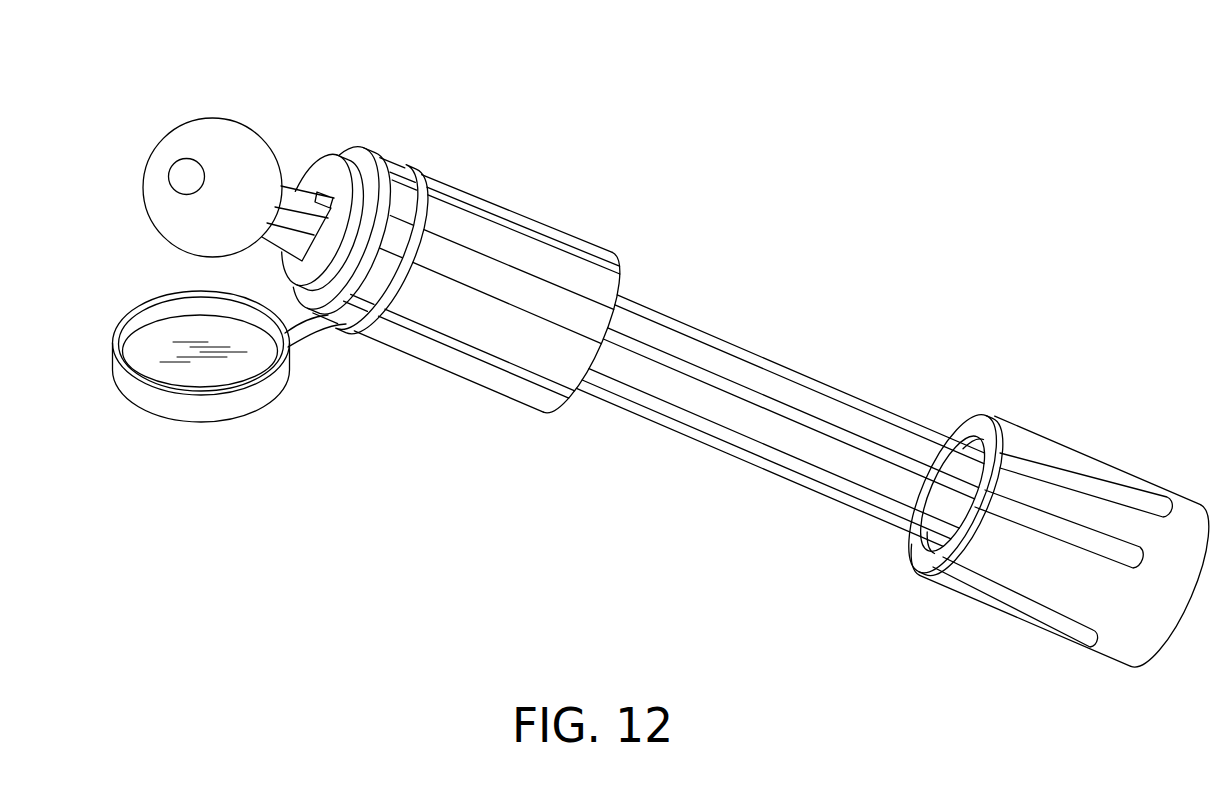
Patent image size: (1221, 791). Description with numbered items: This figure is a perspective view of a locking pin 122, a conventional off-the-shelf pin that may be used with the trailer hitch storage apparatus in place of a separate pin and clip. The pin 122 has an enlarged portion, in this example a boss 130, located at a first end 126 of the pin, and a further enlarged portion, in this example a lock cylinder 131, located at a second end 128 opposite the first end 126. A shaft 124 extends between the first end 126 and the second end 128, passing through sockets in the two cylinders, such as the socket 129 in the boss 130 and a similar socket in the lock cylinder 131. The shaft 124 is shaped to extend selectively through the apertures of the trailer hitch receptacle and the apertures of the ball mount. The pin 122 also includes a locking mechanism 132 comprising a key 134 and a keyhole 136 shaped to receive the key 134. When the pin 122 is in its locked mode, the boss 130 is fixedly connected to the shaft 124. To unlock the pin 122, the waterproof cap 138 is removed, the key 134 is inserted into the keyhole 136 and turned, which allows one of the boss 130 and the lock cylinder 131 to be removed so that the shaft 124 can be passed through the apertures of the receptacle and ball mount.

The locking pin 122 is at (661, 385).
The shaft 124 is at (743, 463).
The first end 126 is at (1060, 567).
The second end 128 is at (366, 145).
The socket 129 is at (977, 437).
The boss 130 is at (1048, 588).
The lock cylinder 131 is at (503, 245).
The locking mechanism 132 is at (343, 352).
The key 134 is at (237, 118).
The keyhole 136 is at (320, 195).
The waterproof cap 138 is at (197, 422).